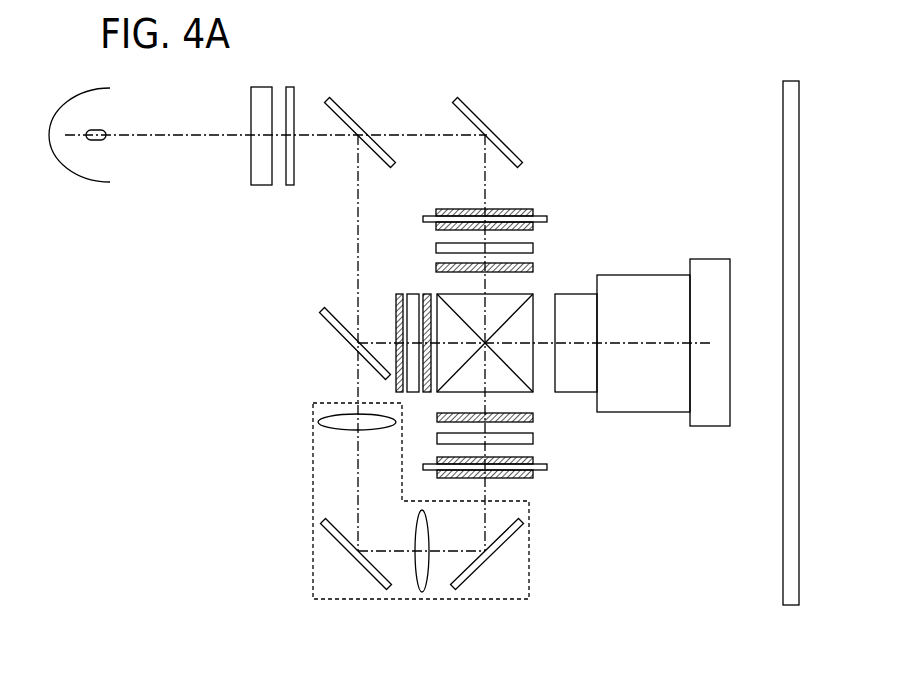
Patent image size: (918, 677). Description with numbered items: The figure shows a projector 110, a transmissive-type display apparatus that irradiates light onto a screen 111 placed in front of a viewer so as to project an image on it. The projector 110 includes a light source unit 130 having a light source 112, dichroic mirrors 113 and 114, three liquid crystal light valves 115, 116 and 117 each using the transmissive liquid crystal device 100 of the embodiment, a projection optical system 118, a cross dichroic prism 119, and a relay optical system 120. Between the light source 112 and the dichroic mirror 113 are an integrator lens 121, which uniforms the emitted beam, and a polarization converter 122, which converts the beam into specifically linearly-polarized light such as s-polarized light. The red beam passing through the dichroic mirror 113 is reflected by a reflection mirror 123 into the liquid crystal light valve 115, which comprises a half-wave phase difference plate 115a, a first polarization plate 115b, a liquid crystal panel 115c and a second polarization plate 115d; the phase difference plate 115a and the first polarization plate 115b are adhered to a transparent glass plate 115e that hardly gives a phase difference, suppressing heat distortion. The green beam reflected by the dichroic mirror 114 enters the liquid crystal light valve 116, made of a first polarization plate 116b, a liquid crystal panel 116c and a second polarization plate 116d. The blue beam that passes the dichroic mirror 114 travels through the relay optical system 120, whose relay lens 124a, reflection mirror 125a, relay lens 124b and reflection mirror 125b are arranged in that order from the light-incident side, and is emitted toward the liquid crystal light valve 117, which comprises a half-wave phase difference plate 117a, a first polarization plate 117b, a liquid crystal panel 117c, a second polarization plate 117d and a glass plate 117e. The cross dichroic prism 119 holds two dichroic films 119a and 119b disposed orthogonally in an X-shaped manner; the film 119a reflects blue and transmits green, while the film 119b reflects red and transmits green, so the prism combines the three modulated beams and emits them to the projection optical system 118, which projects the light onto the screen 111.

The liquid crystal device 100 is at (460, 342).
The projector 110 is at (579, 86).
The screen 111 is at (792, 80).
The light source 112 is at (62, 99).
The dichroic mirror 113 is at (345, 117).
The dichroic mirror 114 is at (341, 338).
The liquid crystal light valve 115 is at (556, 204).
The λ/2 phase difference plate 115a is at (533, 212).
The first polarization plate 115b is at (535, 227).
The liquid crystal panel 115c is at (533, 248).
The second polarization plate 115d is at (534, 254).
The transparent glass plate 115e is at (547, 218).
The liquid crystal light valve 116 is at (310, 308).
The first polarization plate 116b is at (400, 293).
The liquid crystal panel 116c is at (413, 293).
The second polarization plate 116d is at (427, 293).
The liquid crystal light valve 117 is at (556, 480).
The λ/2 phase difference plate 117a is at (535, 506).
The first polarization plate 117b is at (535, 460).
The liquid crystal panel 117c is at (533, 440).
The second polarization plate 117d is at (533, 418).
The transparent glass plate 117e is at (547, 468).
The projection optical system 118 is at (707, 426).
The cross dichroic prism 119 is at (478, 310).
The dichroic film 119a is at (528, 302).
The dichroic film 119b is at (442, 293).
The relay optical system 120 is at (421, 530).
The integrator lens 121 is at (252, 162).
The polarization converter 122 is at (295, 160).
The reflection mirror 123 is at (474, 117).
The relay lens 124a is at (320, 423).
The relay lens 124b is at (428, 586).
The reflection mirror 125a is at (365, 570).
The reflection mirror 125b is at (500, 543).
The light source unit 130 is at (65, 178).